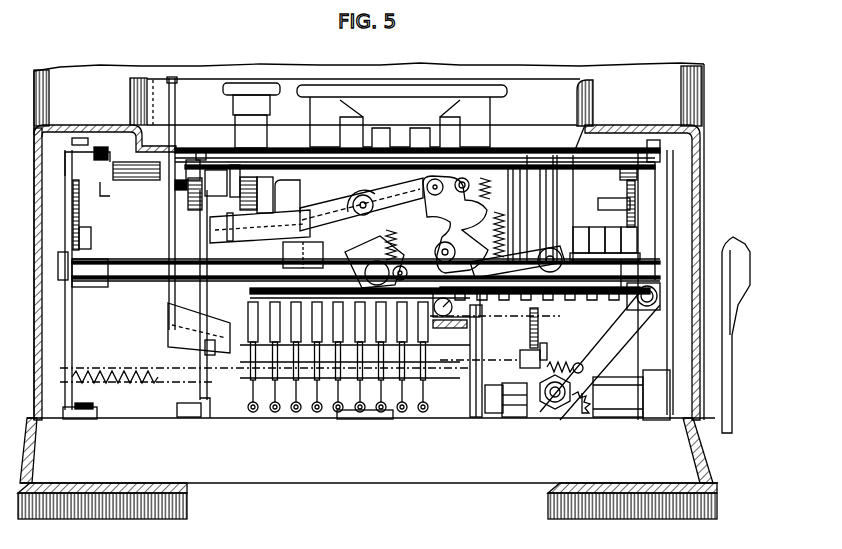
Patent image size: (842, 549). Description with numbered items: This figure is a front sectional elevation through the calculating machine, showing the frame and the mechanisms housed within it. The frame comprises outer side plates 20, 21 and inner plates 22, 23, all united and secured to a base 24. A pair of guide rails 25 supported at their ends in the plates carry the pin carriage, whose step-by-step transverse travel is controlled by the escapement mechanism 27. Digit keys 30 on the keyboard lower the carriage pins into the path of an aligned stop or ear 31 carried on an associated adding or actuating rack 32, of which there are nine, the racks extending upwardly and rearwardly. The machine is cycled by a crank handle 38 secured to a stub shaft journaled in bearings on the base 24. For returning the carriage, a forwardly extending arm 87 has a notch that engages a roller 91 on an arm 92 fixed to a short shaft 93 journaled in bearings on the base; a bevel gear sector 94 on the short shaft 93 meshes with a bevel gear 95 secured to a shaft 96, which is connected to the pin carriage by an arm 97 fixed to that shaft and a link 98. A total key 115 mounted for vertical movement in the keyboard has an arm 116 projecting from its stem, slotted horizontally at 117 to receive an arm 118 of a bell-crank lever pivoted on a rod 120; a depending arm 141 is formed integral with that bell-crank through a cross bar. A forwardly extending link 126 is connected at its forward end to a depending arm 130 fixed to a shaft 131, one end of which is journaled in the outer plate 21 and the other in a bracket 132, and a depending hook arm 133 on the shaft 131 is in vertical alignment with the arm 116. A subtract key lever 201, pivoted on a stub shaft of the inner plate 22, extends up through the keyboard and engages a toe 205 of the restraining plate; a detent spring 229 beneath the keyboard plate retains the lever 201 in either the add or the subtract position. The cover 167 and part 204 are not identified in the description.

The outer side plate 20 is at (67, 337).
The outer side plate 21 is at (675, 358).
The inner plate 22 is at (203, 405).
The inner plate 23 is at (470, 415).
The base 24 is at (308, 475).
The guide rails 25 is at (126, 277).
The escapement mechanism 27 is at (413, 225).
The digit keys 30 is at (485, 110).
The stop or ear 31 is at (303, 297).
The adding or actuating rack 32 is at (335, 398).
The crank handle 38 is at (738, 265).
The forwardly extending arm 87 is at (539, 322).
The roller 91 is at (525, 352).
The arm 92 is at (543, 353).
The short shaft 93 is at (520, 392).
The bevel gear sector 94 is at (600, 418).
The bevel gear 95 is at (527, 395).
The shaft 96 is at (556, 408).
The arm 97 is at (612, 348).
The link 98 is at (640, 288).
The total key 115 is at (248, 90).
The arm 116 is at (215, 176).
The slot 117 is at (183, 198).
The arm 118 is at (184, 163).
The rod 120 is at (101, 182).
The forwardly extending link 126 is at (640, 208).
The depending arm 130 is at (638, 180).
The shaft 131 is at (552, 208).
The bracket 132 is at (212, 212).
The depending hook arm 133 is at (248, 165).
The depending arm 141 is at (72, 218).
The cover 167 is at (683, 90).
The subtract key lever 201 is at (173, 78).
The spring 204 is at (210, 350).
The toe 205 is at (172, 308).
The detent spring 229 is at (142, 150).